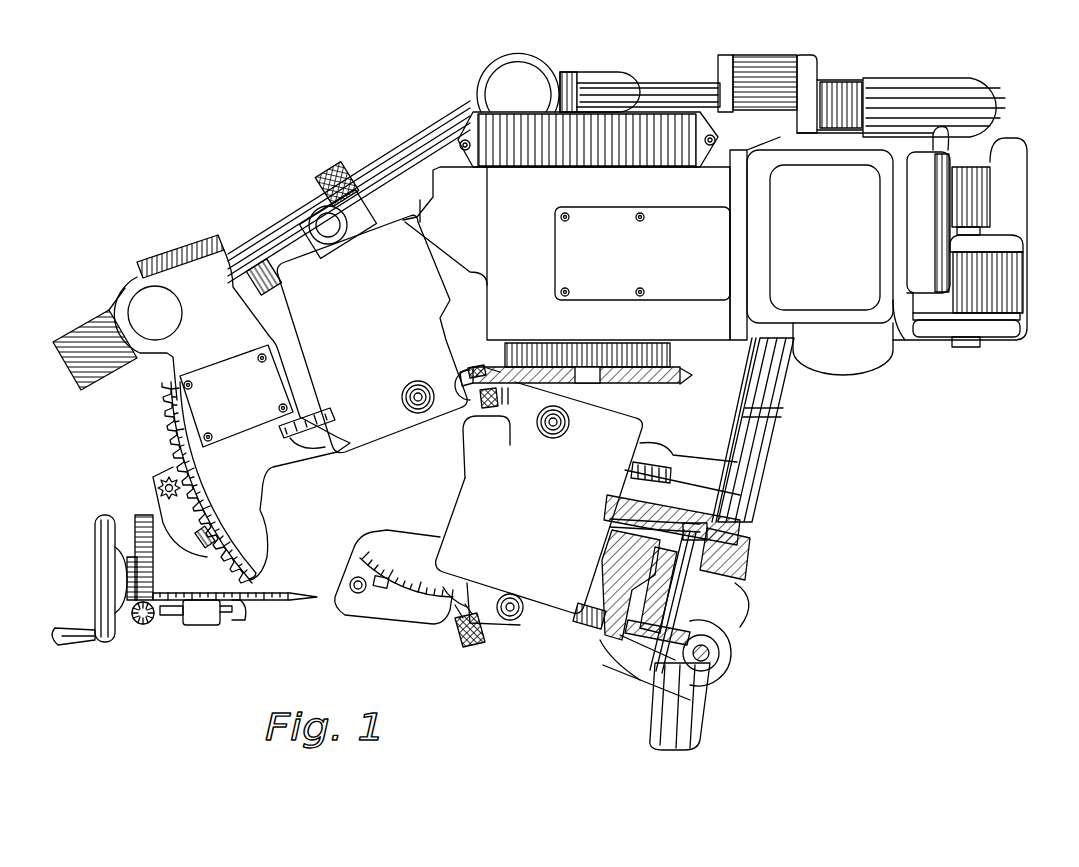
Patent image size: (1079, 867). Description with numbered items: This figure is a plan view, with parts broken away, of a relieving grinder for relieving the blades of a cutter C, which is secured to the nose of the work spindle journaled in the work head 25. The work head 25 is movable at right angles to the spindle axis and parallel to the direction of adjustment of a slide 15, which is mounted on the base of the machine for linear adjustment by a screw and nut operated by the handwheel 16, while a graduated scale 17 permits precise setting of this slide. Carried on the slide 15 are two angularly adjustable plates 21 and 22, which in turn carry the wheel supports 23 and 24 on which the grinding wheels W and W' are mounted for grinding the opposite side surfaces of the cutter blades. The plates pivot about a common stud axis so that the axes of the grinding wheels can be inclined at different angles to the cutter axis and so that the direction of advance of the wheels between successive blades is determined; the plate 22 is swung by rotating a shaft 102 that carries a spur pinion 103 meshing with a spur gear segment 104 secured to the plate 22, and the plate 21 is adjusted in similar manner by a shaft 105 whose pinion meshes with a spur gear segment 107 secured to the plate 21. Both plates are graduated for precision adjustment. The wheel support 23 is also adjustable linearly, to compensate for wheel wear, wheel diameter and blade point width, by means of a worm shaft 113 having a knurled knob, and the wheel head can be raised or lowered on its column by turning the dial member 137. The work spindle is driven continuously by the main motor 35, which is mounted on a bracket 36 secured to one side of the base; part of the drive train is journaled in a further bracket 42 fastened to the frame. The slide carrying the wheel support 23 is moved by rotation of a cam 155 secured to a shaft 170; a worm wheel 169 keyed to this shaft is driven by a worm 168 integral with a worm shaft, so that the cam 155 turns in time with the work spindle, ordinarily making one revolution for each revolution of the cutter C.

The slide 15 is at (317, 597).
The handwheel 16 is at (100, 528).
The graduated scale 17 is at (218, 612).
The angularly adjustable plate 21 is at (390, 517).
The angularly adjustable plate 22 is at (255, 525).
The wheel support 23 is at (465, 483).
The wheel support 24 is at (380, 430).
The work head 25 is at (503, 232).
The main motor 35 is at (953, 325).
The bracket 36 is at (1013, 213).
The bracket 42 is at (893, 93).
The shaft 102 is at (157, 488).
The spur pinion 103 is at (158, 470).
The spur gear segment 104 is at (165, 403).
The shaft 105 is at (363, 593).
The spur gear segment 107 is at (453, 607).
The worm shaft 113 is at (513, 620).
The dial member 137 is at (560, 438).
The cam 155 is at (717, 475).
The worm 168 is at (717, 650).
The worm wheel 169 is at (617, 633).
The shaft 170 is at (727, 603).
The cutter C is at (653, 400).
The grinding wheel W is at (471, 447).
The grinding wheel W' is at (481, 361).